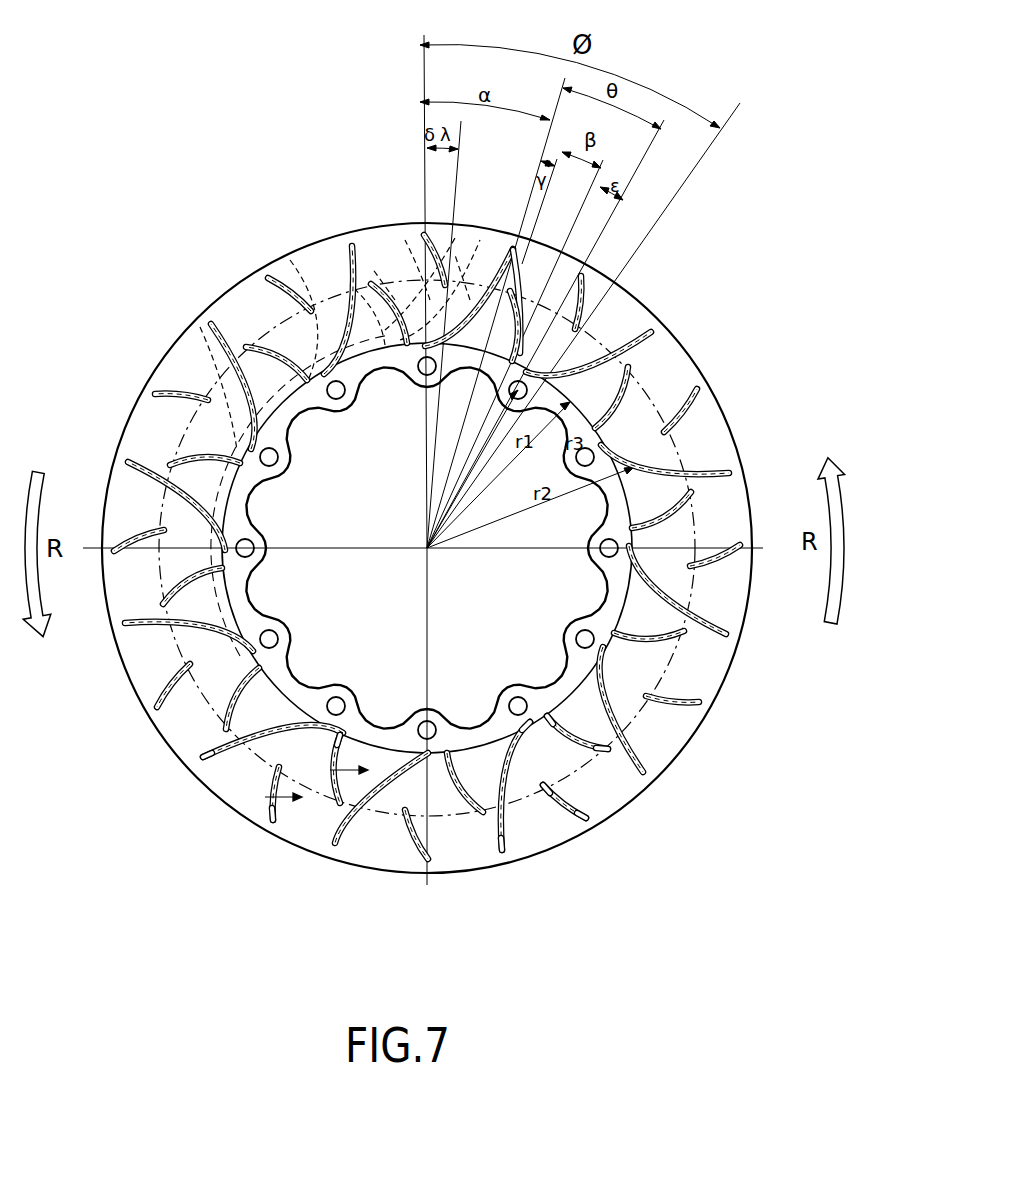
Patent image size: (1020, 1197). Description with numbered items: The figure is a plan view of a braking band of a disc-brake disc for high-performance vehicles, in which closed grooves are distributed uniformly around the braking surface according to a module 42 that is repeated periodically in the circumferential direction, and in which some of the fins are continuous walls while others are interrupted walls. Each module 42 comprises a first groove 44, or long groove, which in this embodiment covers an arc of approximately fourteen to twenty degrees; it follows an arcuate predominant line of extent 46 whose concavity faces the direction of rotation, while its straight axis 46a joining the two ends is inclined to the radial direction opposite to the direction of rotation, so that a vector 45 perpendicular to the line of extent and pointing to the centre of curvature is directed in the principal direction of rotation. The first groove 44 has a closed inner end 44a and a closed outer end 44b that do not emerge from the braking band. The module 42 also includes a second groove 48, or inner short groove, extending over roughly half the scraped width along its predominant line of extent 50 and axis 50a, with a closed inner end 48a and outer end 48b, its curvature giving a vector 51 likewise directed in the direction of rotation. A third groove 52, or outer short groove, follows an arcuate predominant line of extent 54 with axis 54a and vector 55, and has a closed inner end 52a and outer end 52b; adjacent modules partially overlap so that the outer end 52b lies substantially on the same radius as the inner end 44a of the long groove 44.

The module 42 is at (257, 282).
The first groove 44 is at (488, 838).
The inner end 44a is at (520, 716).
The outer end 44b is at (505, 855).
The vector 45 is at (300, 690).
The predominant line of extent 46 is at (200, 762).
The axis 46a is at (200, 759).
The second groove 48 is at (582, 755).
The inner end 48a is at (547, 716).
The outer end 48b is at (590, 754).
The predominant line of extent 50 is at (333, 736).
The axis 50a is at (350, 742).
The vector 51 is at (392, 808).
The third groove 52 is at (566, 815).
The inner end 52a is at (540, 788).
The outer end 52b is at (595, 821).
The predominant line of extent 54 is at (277, 836).
The axis 54a is at (279, 813).
The vector 55 is at (290, 797).